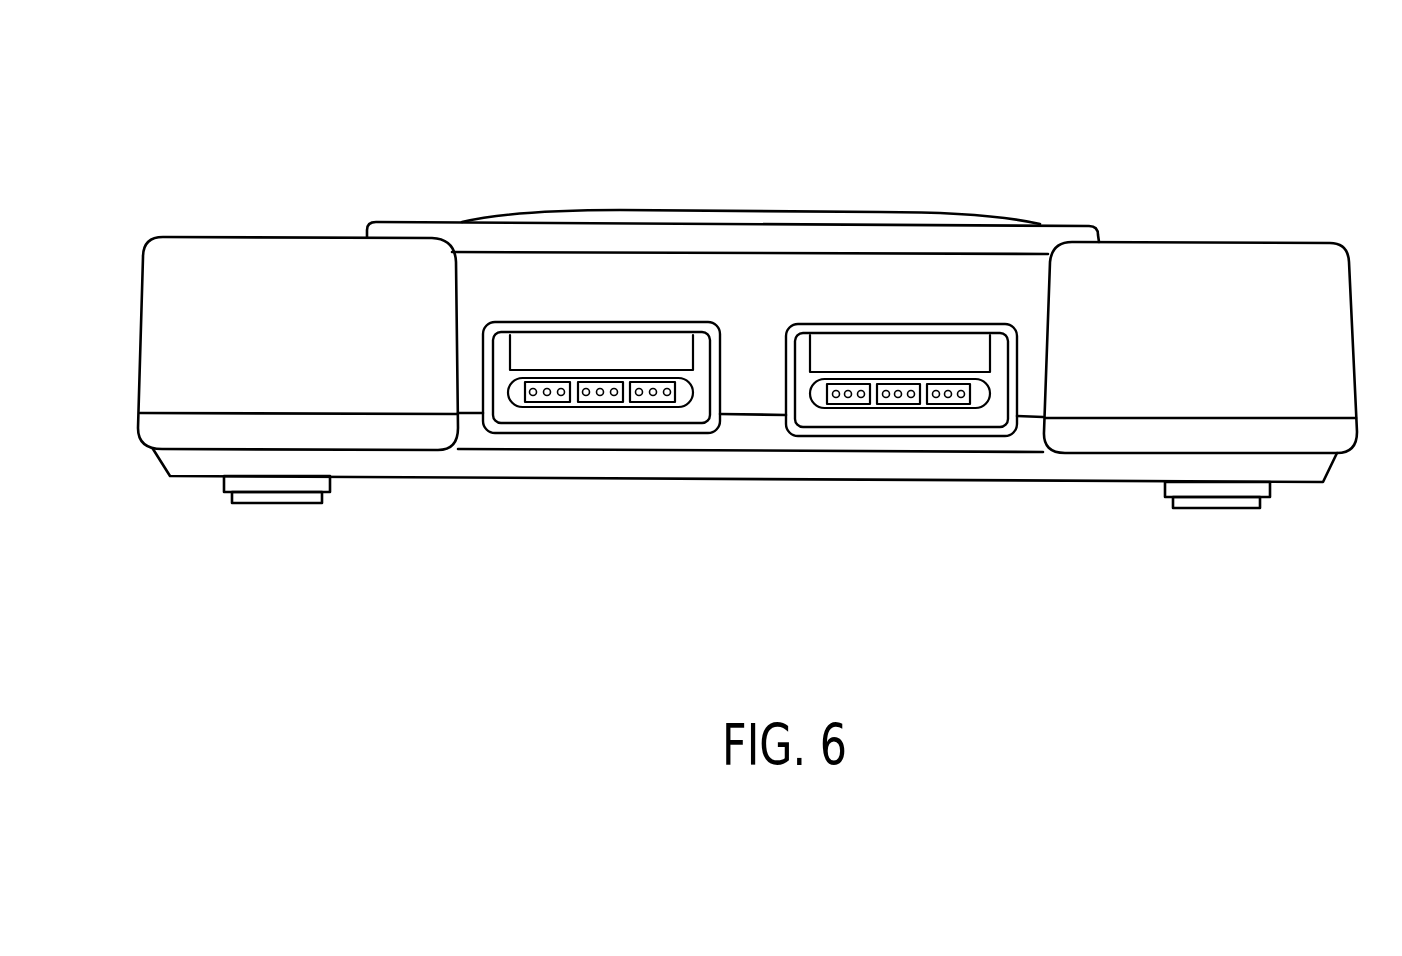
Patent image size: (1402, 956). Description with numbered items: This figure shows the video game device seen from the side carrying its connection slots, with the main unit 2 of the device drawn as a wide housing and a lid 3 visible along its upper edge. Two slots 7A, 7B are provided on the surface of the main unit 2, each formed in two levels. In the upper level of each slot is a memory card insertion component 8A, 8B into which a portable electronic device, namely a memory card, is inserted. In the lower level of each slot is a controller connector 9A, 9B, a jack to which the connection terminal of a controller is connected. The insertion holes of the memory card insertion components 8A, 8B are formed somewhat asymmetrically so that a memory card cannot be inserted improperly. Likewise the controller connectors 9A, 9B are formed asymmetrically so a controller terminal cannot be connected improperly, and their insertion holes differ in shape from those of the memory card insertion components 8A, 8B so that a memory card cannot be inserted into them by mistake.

The main unit 2 is at (1073, 197).
The lid 3 is at (767, 216).
The slot 7A is at (552, 433).
The slot 7B is at (865, 437).
The memory card insertion component 8A is at (582, 345).
The memory card insertion component 8B is at (903, 353).
The controller connector 9A is at (608, 406).
The controller connector 9B is at (903, 408).